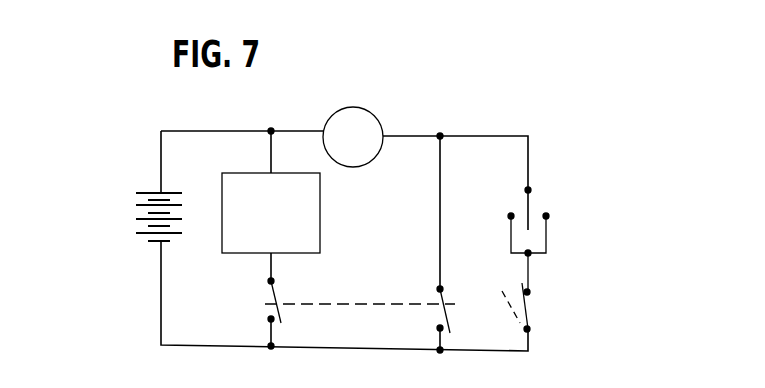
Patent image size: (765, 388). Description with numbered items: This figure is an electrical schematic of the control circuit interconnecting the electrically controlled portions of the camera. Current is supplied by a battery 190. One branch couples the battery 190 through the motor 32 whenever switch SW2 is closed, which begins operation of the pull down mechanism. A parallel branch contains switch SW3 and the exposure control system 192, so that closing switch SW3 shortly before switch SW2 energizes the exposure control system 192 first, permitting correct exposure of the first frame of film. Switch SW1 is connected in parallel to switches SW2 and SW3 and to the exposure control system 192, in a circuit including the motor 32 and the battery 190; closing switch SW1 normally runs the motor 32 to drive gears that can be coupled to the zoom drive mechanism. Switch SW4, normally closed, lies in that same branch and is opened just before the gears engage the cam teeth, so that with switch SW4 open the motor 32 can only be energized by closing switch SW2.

The battery 190 is at (130, 216).
The exposure control system 192 is at (313, 211).
The motor 32 is at (372, 118).
The switch SW-1 SW1 is at (555, 228).
The switch SW-2 SW2 is at (433, 299).
The switch SW-3 SW3 is at (281, 296).
The switch SW-4 SW4 is at (531, 311).